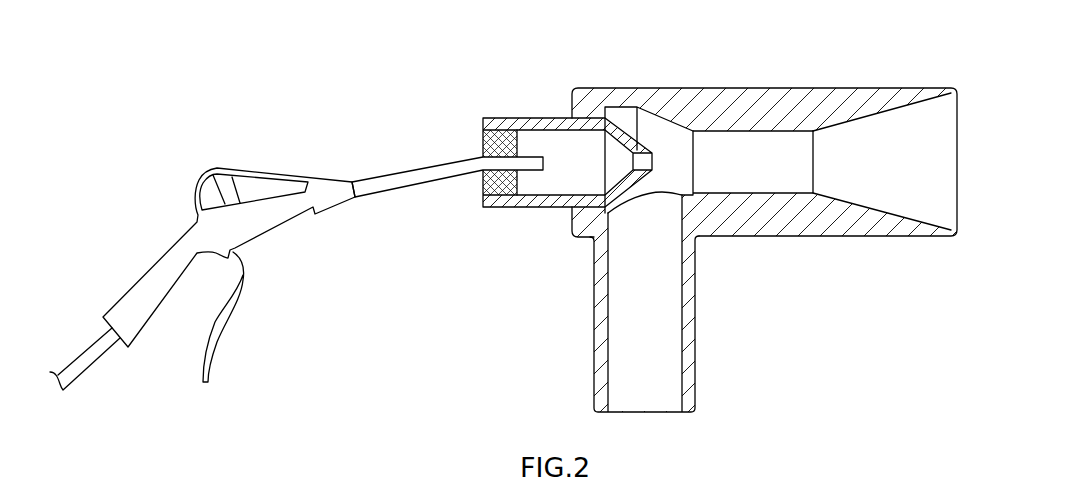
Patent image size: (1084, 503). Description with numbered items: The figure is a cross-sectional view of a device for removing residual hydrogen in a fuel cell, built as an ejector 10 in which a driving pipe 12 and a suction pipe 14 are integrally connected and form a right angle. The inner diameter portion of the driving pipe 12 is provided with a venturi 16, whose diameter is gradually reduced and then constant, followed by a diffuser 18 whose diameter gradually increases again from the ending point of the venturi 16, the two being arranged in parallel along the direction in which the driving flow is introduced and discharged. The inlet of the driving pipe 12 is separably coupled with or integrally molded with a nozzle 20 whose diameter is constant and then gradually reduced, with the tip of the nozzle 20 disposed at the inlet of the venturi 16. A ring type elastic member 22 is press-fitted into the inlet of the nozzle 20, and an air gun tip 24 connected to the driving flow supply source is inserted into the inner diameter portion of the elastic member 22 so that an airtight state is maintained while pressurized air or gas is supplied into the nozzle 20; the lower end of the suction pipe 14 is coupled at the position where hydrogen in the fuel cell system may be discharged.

The ejector 10 is at (742, 50).
The driving pipe 12 is at (820, 103).
The suction pipe 14 is at (688, 345).
The venturi 16 is at (687, 178).
The diffuser 18 is at (883, 192).
The nozzle 20 is at (518, 201).
The elastic member 22 is at (483, 181).
The air gun tip 24 is at (425, 172).